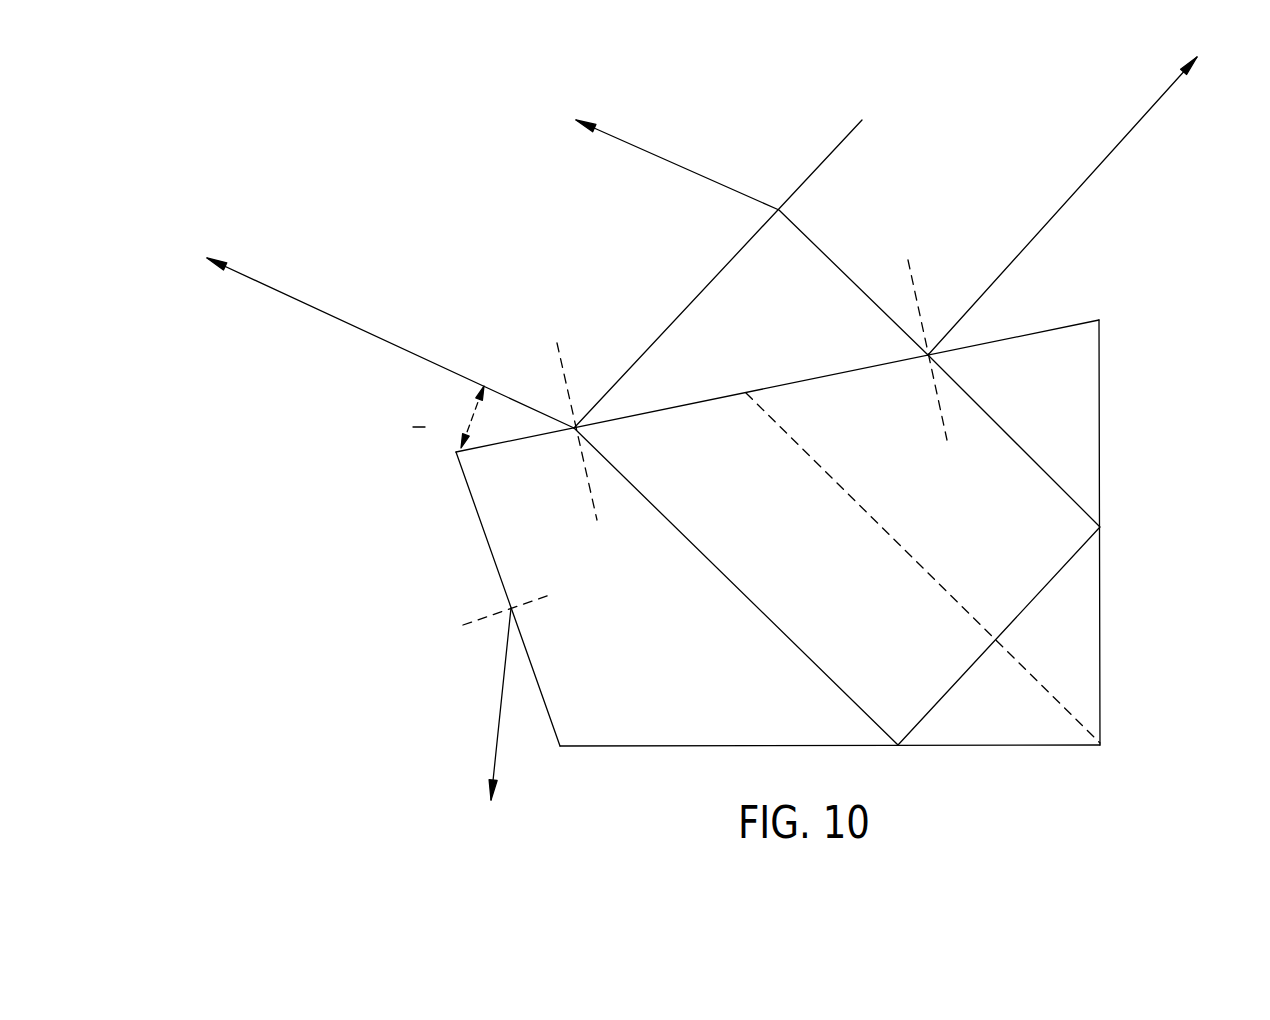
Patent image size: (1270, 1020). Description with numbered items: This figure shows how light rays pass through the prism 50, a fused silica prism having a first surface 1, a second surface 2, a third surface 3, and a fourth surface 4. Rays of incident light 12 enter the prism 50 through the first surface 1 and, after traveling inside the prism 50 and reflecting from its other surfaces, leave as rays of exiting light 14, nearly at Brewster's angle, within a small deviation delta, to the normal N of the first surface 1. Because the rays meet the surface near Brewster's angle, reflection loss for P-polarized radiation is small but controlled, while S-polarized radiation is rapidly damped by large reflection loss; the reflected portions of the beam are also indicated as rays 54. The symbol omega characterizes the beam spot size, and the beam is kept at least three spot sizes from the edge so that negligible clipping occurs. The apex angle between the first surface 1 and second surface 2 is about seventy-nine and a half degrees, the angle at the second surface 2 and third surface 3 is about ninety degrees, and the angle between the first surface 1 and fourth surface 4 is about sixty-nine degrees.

The prism 50 is at (830, 501).
The first surface 1 is at (650, 411).
The second surface 2 is at (1098, 618).
The third surface 3 is at (733, 746).
The fourth surface 4 is at (536, 655).
The rays of incident light 12 is at (815, 177).
The rays of exiting light 14 is at (1093, 171).
The reflected light beams 54 is at (310, 307).